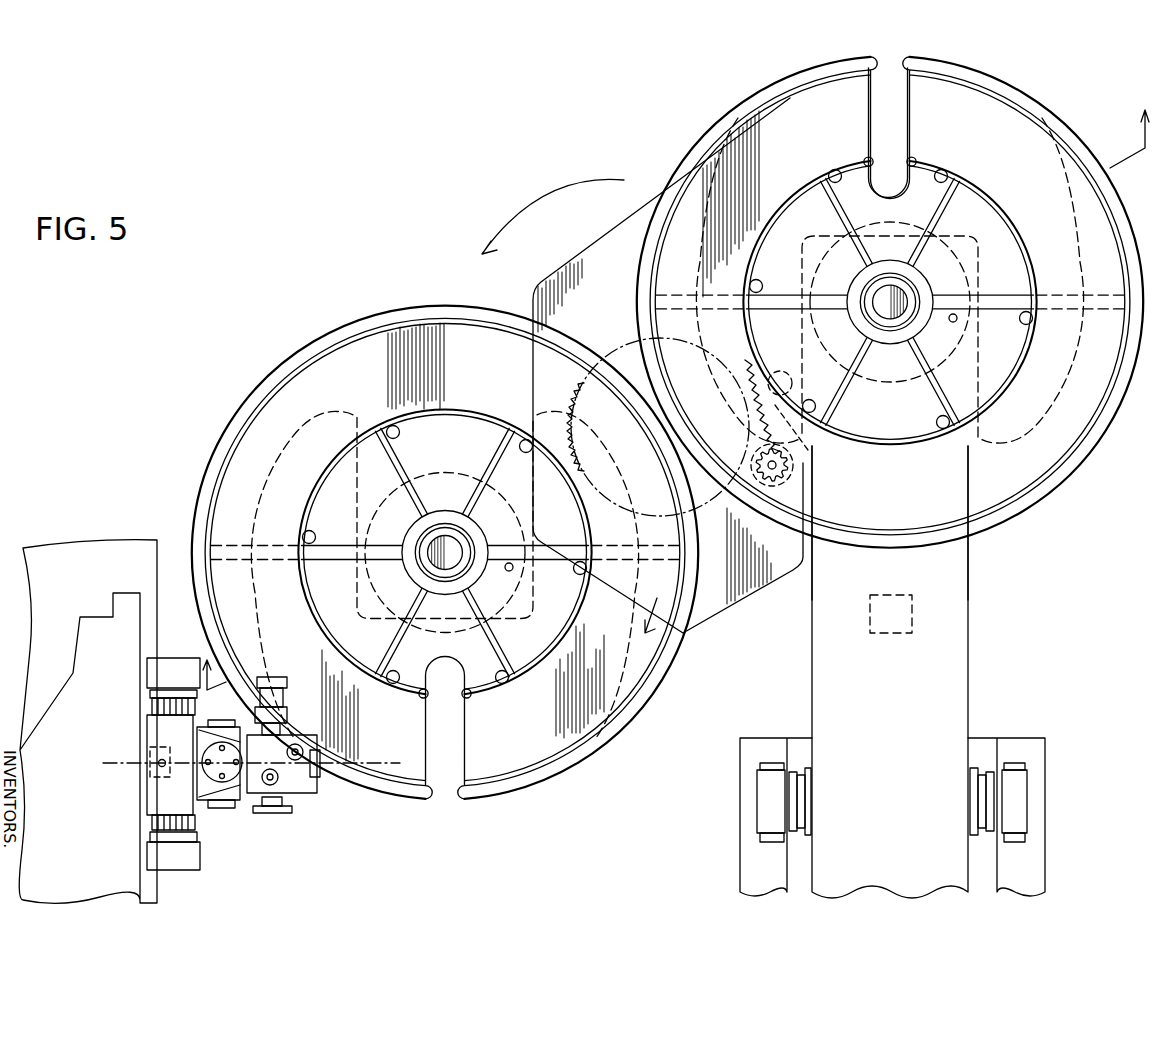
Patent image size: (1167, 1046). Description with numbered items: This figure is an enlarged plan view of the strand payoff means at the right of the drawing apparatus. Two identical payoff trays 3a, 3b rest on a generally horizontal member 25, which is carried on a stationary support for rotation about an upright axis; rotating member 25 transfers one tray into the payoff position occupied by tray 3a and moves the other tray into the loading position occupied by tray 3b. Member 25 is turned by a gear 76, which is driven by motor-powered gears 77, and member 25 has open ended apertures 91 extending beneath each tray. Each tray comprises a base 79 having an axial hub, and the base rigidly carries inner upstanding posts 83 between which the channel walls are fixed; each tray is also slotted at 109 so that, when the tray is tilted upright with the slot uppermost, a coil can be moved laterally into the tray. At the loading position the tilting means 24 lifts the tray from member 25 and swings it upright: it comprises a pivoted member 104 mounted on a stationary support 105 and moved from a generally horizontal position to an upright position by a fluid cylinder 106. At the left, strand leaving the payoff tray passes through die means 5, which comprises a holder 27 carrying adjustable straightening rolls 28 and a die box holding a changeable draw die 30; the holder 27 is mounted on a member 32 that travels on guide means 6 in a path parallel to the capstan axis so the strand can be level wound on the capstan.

The payoff tray 3a is at (342, 322).
The payoff tray 3b is at (1108, 420).
The die means 5 is at (300, 794).
The guide means 6 is at (668, 382).
The tilting means 24 is at (968, 655).
The horizontal member 25 is at (612, 230).
The holder 27 is at (290, 805).
The straightening rolls 28 is at (298, 744).
The draw die 30 is at (160, 745).
The member 32 is at (167, 797).
The gear 76 is at (624, 336).
The gears 77 is at (800, 465).
The base 79 is at (458, 448).
The inner upstanding posts 83 is at (317, 536).
The open ended apertures 91 is at (537, 488).
The pivoted member 104 is at (968, 583).
The stationary support 105 is at (1028, 780).
The fluid cylinder 106 is at (882, 637).
The slot 109 is at (903, 82).